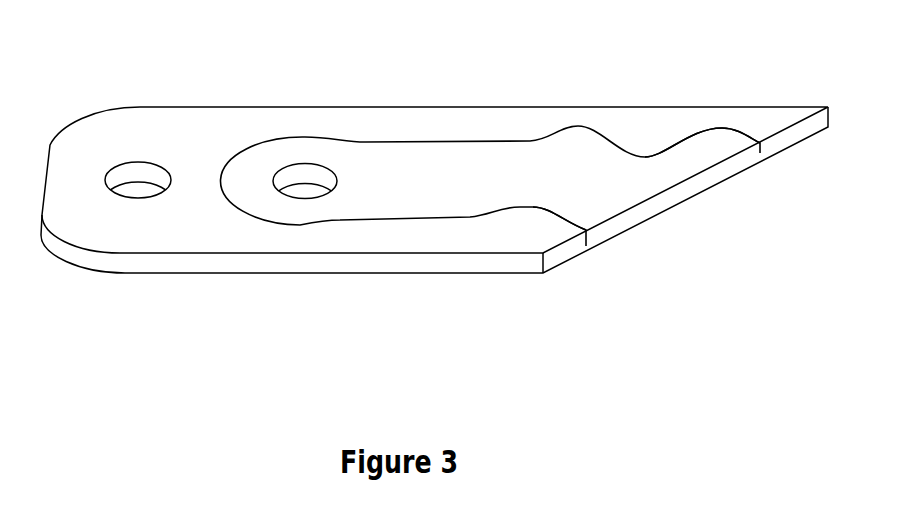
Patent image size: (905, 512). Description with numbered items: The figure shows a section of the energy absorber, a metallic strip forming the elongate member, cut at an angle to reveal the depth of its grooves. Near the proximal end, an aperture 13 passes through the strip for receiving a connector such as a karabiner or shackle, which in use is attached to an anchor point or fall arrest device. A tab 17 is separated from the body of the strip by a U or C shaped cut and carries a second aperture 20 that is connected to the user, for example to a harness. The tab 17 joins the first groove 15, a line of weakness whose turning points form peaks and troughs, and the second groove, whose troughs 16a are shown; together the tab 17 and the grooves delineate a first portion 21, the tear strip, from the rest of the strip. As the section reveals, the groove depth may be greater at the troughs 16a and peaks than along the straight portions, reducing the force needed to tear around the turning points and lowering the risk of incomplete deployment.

The aperture 13 is at (135, 190).
The first groove 15 is at (688, 142).
The troughs 16a is at (585, 232).
The tab 17 is at (302, 148).
The aperture 20 is at (302, 190).
The first portion 21 is at (482, 168).